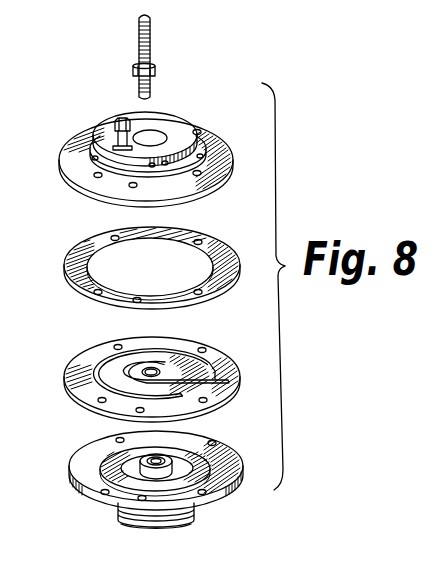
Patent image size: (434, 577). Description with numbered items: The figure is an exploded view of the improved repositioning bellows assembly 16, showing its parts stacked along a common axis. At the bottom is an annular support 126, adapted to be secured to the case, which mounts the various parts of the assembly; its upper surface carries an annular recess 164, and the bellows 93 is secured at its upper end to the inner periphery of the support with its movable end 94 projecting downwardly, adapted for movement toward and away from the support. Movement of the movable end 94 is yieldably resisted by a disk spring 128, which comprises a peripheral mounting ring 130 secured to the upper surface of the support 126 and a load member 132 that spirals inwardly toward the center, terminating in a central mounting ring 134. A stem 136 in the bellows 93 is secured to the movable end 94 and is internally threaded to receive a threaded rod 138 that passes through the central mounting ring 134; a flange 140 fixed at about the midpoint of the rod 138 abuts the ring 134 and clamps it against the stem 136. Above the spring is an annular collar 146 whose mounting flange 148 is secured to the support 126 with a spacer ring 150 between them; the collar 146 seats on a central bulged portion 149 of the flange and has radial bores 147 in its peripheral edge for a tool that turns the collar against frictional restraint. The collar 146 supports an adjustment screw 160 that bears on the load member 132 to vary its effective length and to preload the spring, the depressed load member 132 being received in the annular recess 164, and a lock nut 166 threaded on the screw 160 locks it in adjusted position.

The cover assembly 16 is at (354, 214).
The bellows 93 is at (173, 528).
The movable end of bellows 94 is at (141, 530).
The annular support 126 is at (236, 491).
The disk spring 128 is at (222, 352).
The peripheral mounting ring 130 is at (72, 378).
The load member 132 is at (230, 376).
The central mounting ring 134 is at (163, 368).
The stem 136 is at (172, 462).
The threaded rod 138 is at (151, 89).
The flange 140 is at (151, 65).
The annular collar 146 is at (182, 124).
The radial bores 147 is at (95, 160).
The mounting flange 148 is at (220, 171).
The central bulged portion 149 is at (200, 150).
The spacer ring 150 is at (254, 238).
The adjustment screw 160 is at (121, 116).
The annular recess 164 is at (210, 460).
The lock nut 166 is at (112, 142).